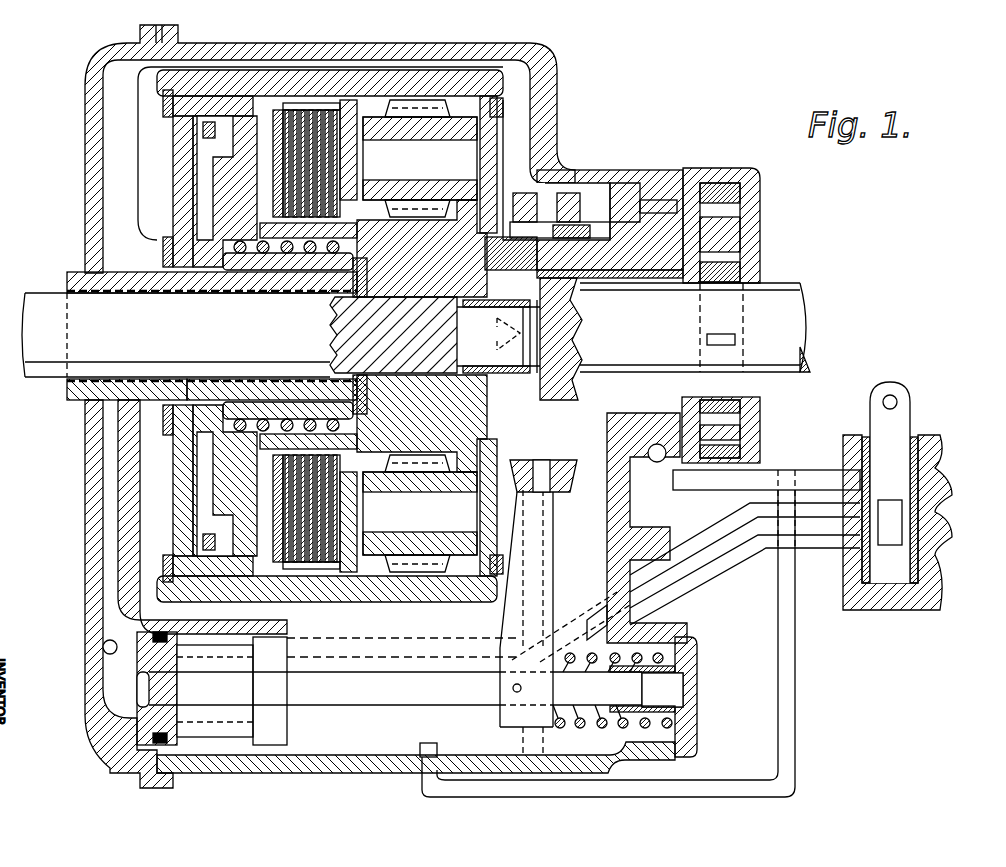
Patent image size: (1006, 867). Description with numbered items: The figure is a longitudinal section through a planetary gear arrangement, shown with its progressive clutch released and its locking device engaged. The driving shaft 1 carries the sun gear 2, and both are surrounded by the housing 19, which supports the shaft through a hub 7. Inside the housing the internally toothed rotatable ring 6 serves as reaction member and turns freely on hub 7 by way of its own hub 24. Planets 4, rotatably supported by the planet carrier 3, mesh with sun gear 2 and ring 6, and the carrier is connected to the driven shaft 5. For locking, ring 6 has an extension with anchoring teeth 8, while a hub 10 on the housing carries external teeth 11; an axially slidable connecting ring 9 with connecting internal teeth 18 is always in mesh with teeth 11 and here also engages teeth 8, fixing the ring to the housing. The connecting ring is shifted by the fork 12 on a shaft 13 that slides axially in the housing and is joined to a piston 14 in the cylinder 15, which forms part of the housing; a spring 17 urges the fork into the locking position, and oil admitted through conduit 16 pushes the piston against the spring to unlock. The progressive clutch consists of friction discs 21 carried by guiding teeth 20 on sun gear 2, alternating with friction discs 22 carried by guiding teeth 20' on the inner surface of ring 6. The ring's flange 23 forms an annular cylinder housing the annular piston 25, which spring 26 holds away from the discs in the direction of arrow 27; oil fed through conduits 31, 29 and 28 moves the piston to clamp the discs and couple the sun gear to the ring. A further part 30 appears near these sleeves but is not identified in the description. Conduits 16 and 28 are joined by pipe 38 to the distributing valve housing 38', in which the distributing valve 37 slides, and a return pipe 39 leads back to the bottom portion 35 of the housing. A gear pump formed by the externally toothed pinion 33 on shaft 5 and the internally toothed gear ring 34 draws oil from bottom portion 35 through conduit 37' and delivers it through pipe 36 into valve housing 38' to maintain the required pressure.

The driving shaft 1 is at (50, 300).
The sun gear 2 is at (408, 245).
The planet carrier 3 is at (517, 227).
The planets 4 is at (420, 477).
The driven shaft 5 is at (790, 308).
The internally toothed rotatable ring 6 is at (477, 77).
The hub 7 is at (198, 397).
The anchoring teeth 8 is at (545, 195).
The connecting ring 9 is at (587, 480).
The hub 10 is at (573, 247).
The external teeth 11 is at (587, 227).
The fork 12 is at (517, 490).
The shaft 13 is at (453, 693).
The piston 14 is at (213, 713).
The cylinder 15 is at (140, 710).
The conduit 16 is at (110, 672).
The spring 17 is at (697, 723).
The connecting internal teeth 18 is at (527, 222).
The housing 19 is at (93, 148).
The guiding teeth 20 is at (225, 480).
The guiding teeth 20' is at (327, 602).
The friction discs 21 is at (267, 110).
The friction discs 22 is at (300, 107).
The flange 23 is at (173, 520).
The hub 24 is at (247, 271).
The annular piston 25 is at (223, 207).
The spring 26 is at (310, 254).
The arrow 27 is at (257, 402).
The conduit 28 is at (113, 440).
The conduit 29 is at (127, 390).
The sleeve 30 is at (213, 397).
The conduit 31 is at (200, 294).
The externally toothed pinion 33 is at (743, 380).
The internally toothed gear ring 34 is at (743, 430).
The bottom portion 35 is at (370, 755).
The pipe 36 is at (813, 480).
The distributing valve 37 is at (920, 482).
The conduit 37' is at (650, 643).
The pipe 38 is at (745, 544).
The distributing valve housing 38' is at (919, 522).
The return pipe 39 is at (688, 587).